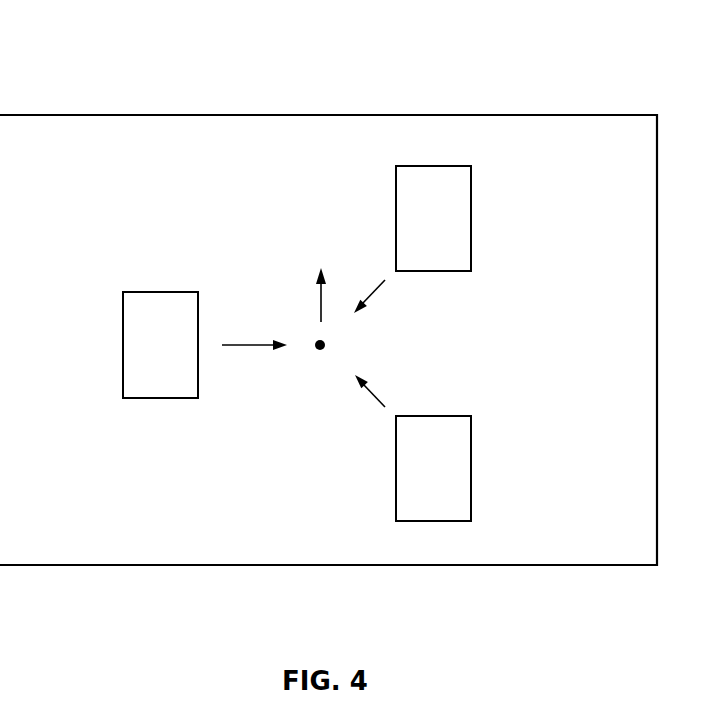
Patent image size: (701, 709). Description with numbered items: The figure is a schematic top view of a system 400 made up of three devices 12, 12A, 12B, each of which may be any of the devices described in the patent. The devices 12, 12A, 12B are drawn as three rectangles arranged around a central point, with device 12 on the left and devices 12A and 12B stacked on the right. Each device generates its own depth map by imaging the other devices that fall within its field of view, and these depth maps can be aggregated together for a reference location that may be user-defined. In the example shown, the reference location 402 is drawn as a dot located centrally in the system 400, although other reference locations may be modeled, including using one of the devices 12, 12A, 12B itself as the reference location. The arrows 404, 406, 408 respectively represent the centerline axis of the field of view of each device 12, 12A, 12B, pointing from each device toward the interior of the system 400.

The system 400 is at (108, 186).
The device 12 is at (132, 292).
The device 12A is at (472, 178).
The device 12B is at (472, 440).
The reference location 402 is at (314, 350).
The arrow 404 is at (265, 346).
The arrow 406 is at (375, 292).
The arrow 408 is at (372, 397).